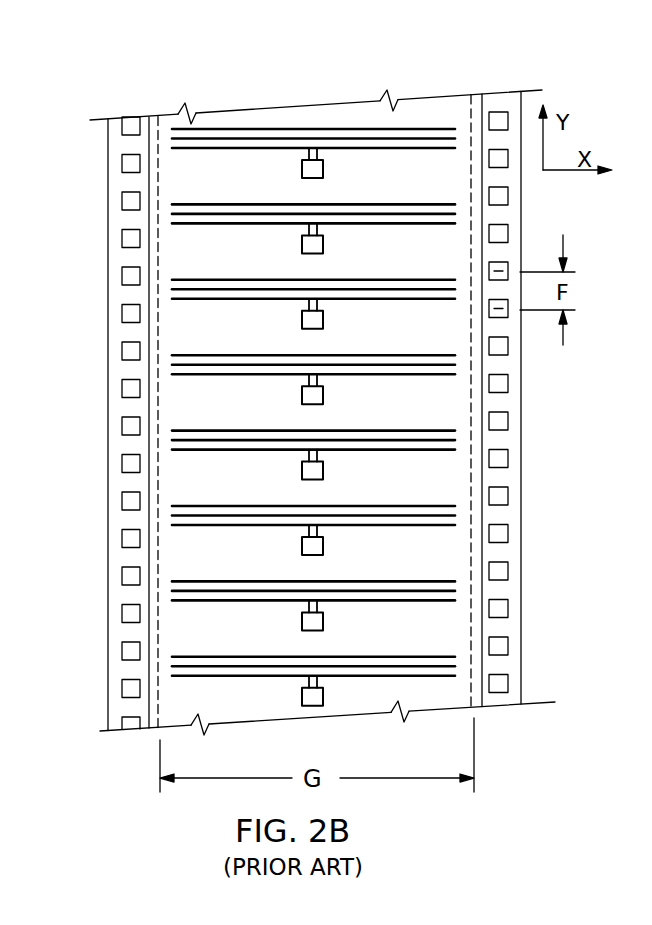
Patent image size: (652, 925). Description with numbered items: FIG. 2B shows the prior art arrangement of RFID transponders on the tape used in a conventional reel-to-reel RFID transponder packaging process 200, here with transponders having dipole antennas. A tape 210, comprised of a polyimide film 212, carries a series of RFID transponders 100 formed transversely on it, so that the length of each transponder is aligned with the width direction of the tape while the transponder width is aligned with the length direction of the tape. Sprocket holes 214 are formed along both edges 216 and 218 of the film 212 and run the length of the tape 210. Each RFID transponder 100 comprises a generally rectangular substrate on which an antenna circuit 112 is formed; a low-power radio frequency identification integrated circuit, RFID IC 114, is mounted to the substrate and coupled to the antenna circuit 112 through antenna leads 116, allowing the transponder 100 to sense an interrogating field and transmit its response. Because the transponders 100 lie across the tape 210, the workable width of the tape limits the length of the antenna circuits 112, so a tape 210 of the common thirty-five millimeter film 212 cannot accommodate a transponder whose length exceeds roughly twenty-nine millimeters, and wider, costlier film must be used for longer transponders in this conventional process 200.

The RFID transponder 100 is at (283, 138).
The antenna circuit 112 is at (366, 140).
The RFID IC 114 is at (303, 165).
The antenna leads 116 is at (312, 151).
The reel-to-reel RFID transponder packaging process 200 is at (505, 75).
The tape 210 is at (519, 401).
The polyimide film 212 is at (442, 490).
The sprocket holes 214 is at (122, 537).
The edge 216 is at (108, 630).
The edge 218 is at (520, 587).